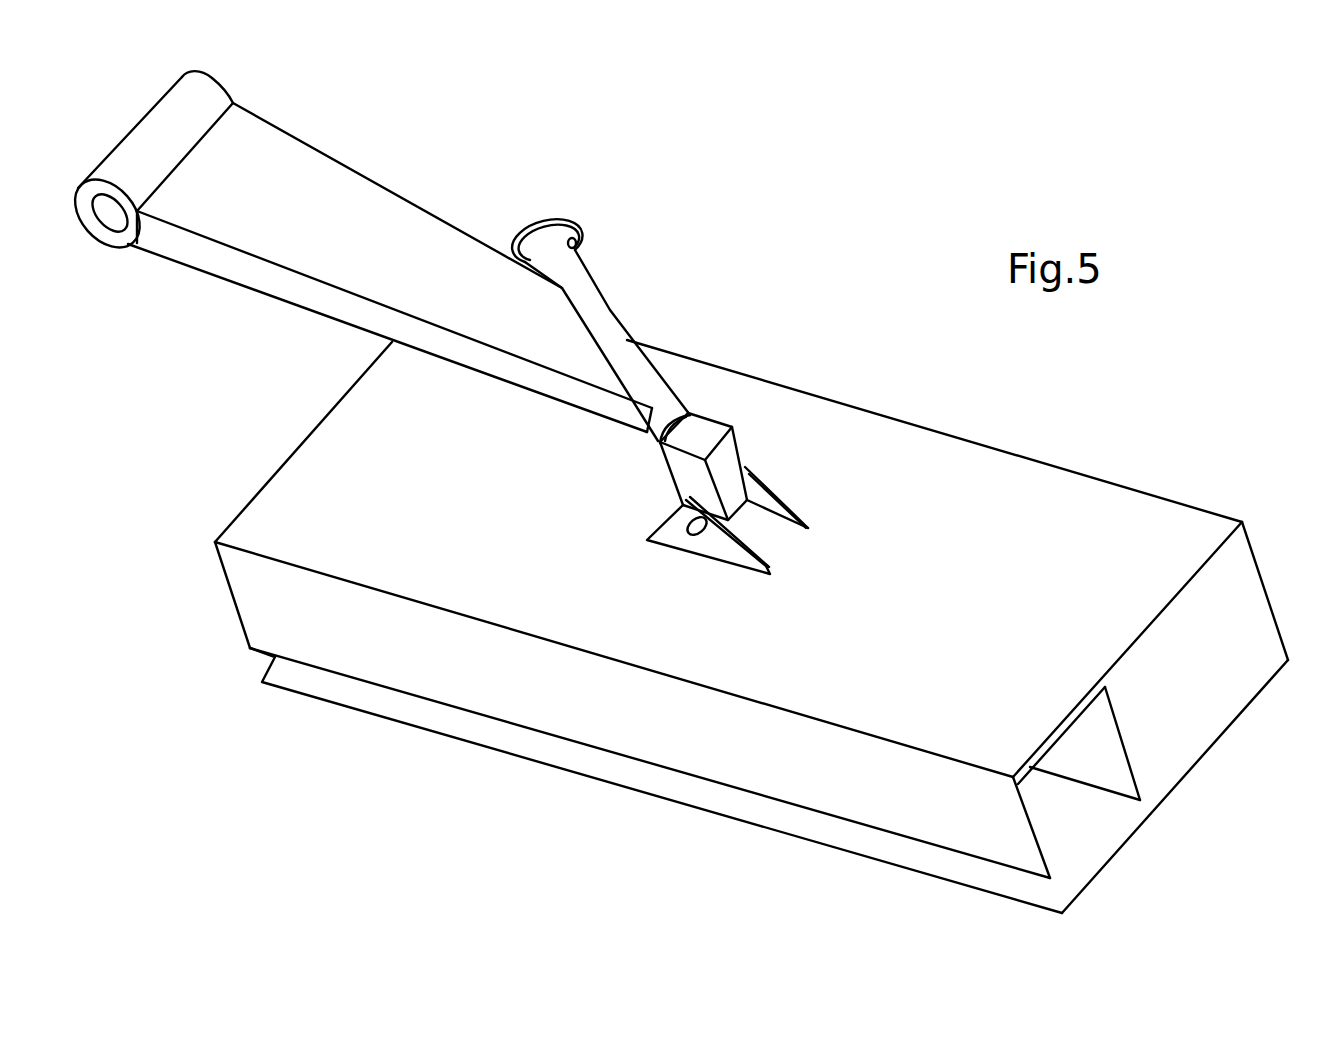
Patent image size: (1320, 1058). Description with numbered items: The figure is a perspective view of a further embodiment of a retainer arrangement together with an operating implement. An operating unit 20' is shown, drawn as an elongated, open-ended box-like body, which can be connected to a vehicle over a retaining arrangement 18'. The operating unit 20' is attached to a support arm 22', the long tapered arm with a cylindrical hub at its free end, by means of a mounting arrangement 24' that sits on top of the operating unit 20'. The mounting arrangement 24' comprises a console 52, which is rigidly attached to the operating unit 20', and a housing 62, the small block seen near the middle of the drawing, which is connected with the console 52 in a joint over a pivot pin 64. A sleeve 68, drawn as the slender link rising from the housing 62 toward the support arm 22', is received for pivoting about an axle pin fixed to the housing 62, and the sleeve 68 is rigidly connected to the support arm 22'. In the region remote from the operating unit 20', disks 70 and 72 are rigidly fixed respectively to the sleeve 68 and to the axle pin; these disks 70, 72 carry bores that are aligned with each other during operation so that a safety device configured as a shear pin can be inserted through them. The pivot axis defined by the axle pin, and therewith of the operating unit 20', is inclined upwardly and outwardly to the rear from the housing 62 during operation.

The retaining arrangement 18' is at (186, 353).
The operating unit 20' is at (751, 626).
The support arm 22' is at (357, 251).
The mounting arrangement 24' is at (756, 400).
The console 52 is at (800, 513).
The housing 62 is at (728, 443).
The pivot pin 64 is at (695, 528).
The sleeve 68 is at (602, 322).
The disk 70 is at (562, 230).
The disk 72 is at (537, 230).